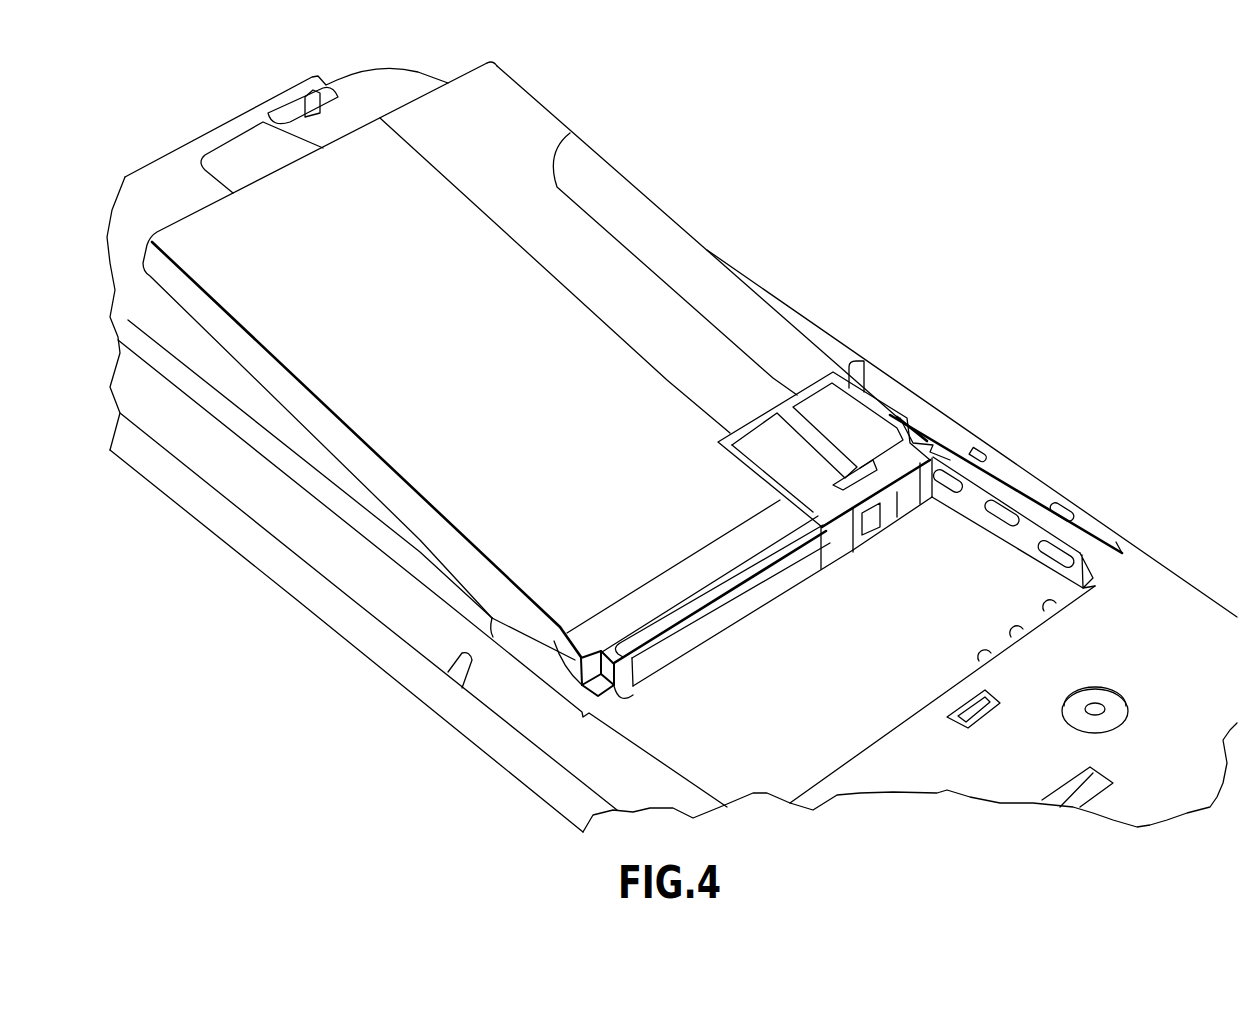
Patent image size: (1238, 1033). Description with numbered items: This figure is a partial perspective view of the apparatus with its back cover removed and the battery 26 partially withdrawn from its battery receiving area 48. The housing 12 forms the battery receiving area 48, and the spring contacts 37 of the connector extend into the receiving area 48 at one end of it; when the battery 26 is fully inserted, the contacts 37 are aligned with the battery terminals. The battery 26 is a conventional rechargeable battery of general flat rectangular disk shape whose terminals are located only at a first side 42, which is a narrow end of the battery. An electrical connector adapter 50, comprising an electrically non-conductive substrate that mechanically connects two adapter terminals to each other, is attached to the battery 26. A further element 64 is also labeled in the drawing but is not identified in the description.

The housing 12 is at (1137, 612).
The rechargeable battery 26 is at (655, 250).
The spring contacts 37 is at (1051, 607).
The first side 42 is at (672, 650).
The battery receiving area 48 is at (983, 553).
The electrical connector adapter 50 is at (822, 410).
The edge flange 64 is at (690, 340).